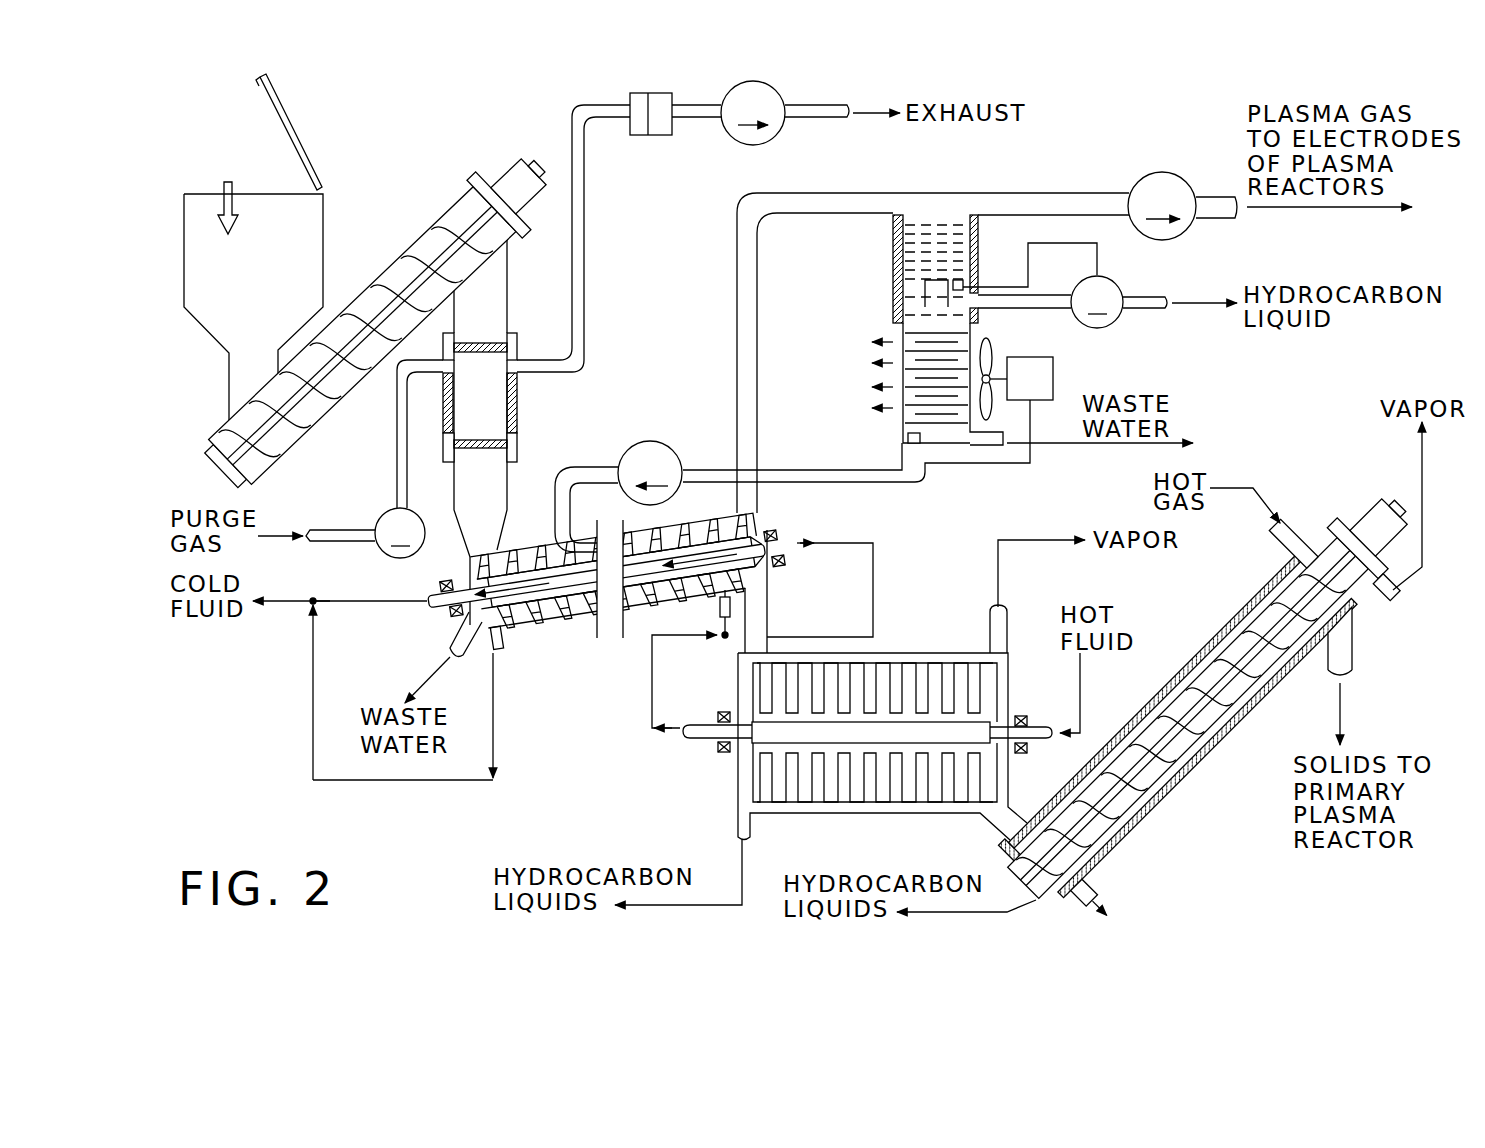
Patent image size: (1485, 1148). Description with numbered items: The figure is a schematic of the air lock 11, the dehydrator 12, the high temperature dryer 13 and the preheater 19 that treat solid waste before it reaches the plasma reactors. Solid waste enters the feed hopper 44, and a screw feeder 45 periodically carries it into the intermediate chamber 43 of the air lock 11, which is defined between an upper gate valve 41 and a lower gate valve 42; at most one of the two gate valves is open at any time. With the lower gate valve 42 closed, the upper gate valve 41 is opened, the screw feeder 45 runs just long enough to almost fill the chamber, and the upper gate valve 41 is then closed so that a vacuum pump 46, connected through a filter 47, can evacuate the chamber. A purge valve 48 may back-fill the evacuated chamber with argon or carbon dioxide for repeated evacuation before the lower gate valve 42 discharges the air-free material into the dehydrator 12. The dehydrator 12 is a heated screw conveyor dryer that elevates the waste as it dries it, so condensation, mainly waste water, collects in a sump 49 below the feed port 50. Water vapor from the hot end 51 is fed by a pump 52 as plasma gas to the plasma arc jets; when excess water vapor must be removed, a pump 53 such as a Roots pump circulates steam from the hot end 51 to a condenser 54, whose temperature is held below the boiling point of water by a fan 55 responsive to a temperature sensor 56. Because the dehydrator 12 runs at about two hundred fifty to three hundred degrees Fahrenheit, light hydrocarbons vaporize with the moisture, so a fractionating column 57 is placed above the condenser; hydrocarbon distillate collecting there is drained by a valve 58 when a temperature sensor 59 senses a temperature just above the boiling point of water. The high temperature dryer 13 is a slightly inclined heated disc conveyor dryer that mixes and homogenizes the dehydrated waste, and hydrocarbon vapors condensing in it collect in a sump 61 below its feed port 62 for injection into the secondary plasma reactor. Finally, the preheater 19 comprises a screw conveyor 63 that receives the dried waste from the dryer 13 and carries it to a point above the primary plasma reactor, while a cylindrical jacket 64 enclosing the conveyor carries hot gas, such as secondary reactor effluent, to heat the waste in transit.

The air lock 11 is at (543, 188).
The dehydrator 12 is at (563, 640).
The high temperature dryer 13 is at (922, 638).
The preheater 19 is at (1227, 722).
The upper gate valve 41 is at (477, 342).
The lower gate valve 42 is at (468, 442).
The intermediate chamber 43 is at (487, 400).
The feed hopper 44 is at (287, 237).
The screw feeder 45 is at (438, 214).
The vacuum pump 46 is at (783, 133).
The filter 47 is at (655, 125).
The purge valve 48 is at (387, 513).
The sump 49 is at (460, 630).
The feed port 50 is at (477, 557).
The hot end 51 is at (753, 508).
The pump 52 is at (1153, 173).
The pump 53 is at (652, 441).
The condenser 54 is at (868, 377).
The fan 55 is at (1062, 368).
The temperature sensor 56 is at (906, 437).
The condenser tank 57 is at (890, 265).
The valve 58 is at (1113, 282).
The temperature sensor 59 is at (967, 285).
The sump 61 is at (745, 810).
The feed port 62 is at (755, 648).
The screw conveyor 63 is at (1180, 770).
The cylindrical jacket 64 is at (1167, 815).